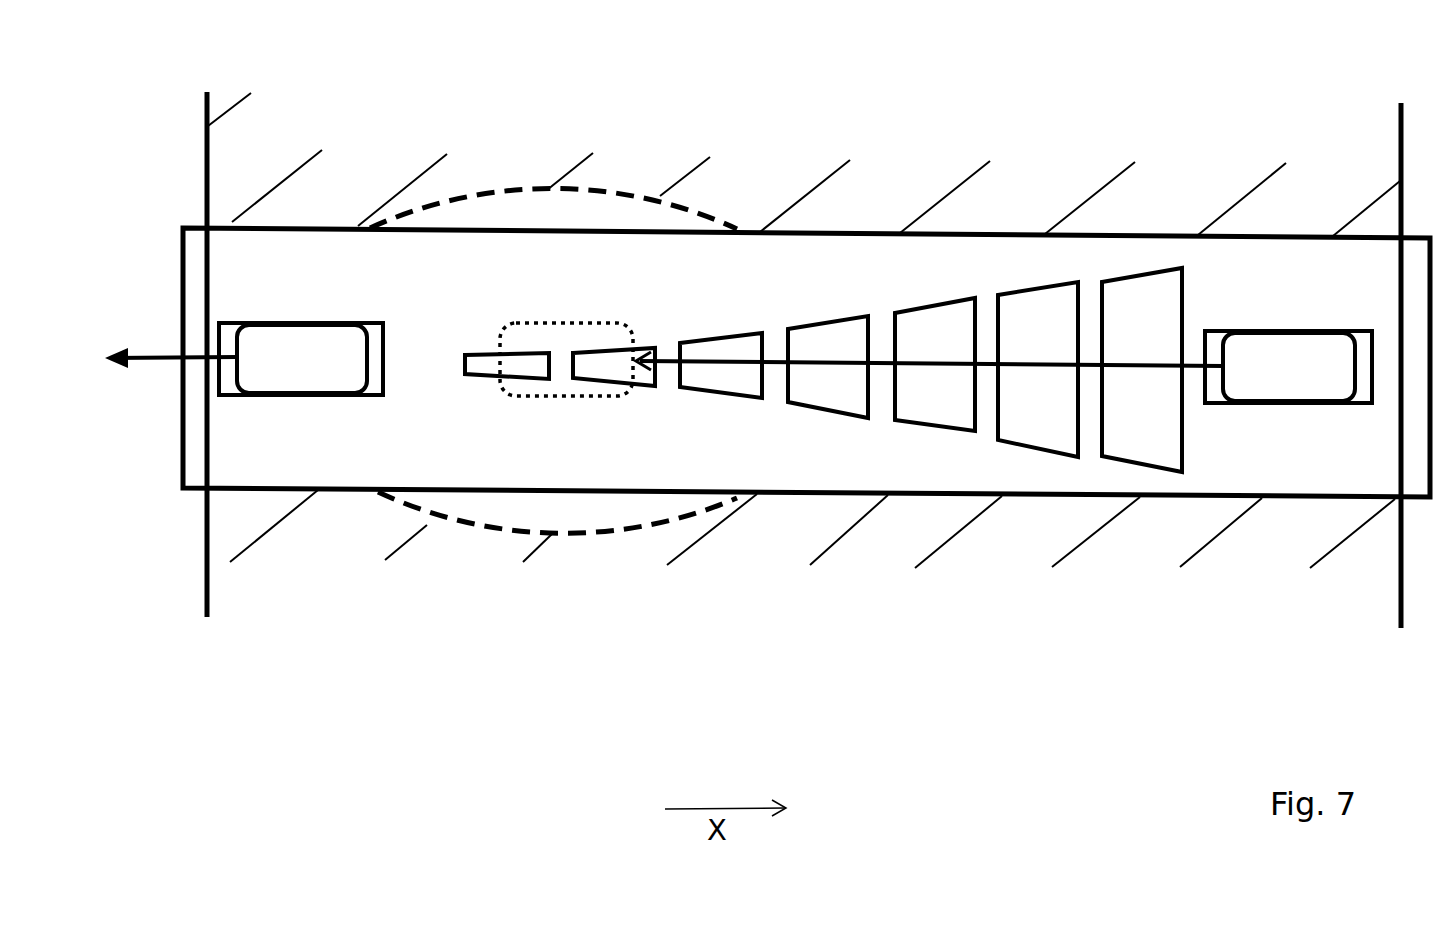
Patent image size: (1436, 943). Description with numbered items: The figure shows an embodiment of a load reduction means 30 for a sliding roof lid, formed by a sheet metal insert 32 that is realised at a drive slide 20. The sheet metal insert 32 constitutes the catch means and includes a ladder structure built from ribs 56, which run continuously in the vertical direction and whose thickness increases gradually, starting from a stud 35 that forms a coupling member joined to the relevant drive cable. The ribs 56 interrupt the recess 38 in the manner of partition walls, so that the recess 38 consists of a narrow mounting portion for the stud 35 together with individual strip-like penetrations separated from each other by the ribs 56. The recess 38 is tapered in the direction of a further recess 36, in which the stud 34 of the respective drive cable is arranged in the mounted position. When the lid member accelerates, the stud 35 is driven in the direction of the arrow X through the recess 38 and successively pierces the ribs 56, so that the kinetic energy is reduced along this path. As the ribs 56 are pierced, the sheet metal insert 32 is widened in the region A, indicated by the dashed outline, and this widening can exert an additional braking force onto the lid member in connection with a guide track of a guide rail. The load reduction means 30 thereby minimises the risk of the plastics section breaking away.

The drive slide 20 is at (251, 159).
The load reduction means 30 is at (180, 462).
The sheet metal insert 32 is at (549, 262).
The stud 34 is at (321, 352).
The stud 35 is at (1285, 360).
The recess 36 is at (365, 395).
The recess 38 is at (1022, 318).
The ribs 56 is at (558, 365).
The region A is at (520, 528).